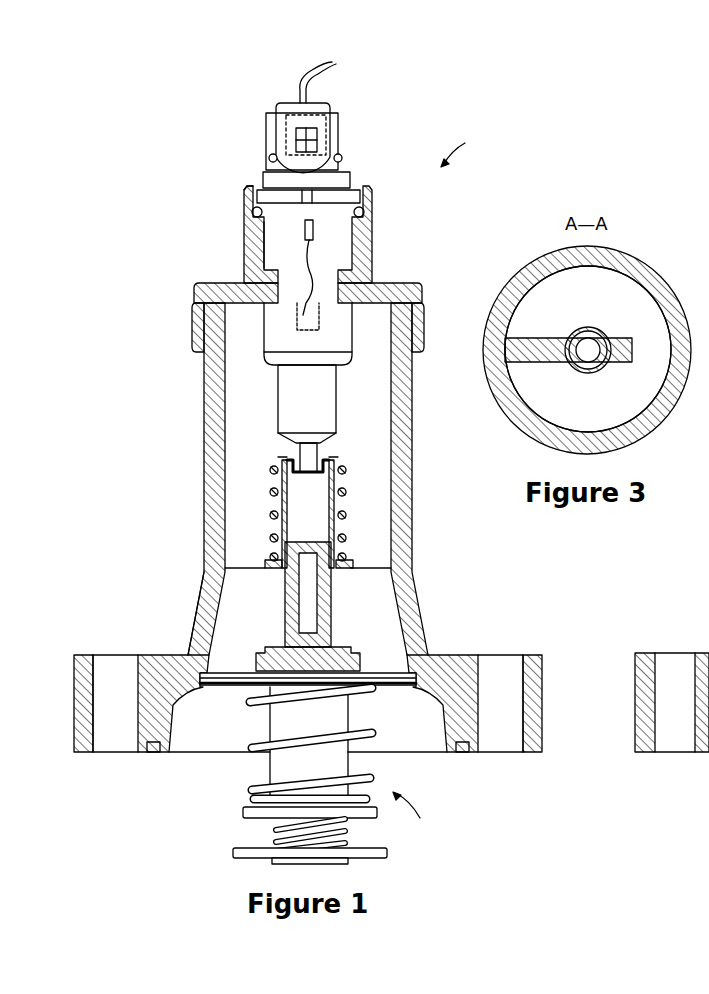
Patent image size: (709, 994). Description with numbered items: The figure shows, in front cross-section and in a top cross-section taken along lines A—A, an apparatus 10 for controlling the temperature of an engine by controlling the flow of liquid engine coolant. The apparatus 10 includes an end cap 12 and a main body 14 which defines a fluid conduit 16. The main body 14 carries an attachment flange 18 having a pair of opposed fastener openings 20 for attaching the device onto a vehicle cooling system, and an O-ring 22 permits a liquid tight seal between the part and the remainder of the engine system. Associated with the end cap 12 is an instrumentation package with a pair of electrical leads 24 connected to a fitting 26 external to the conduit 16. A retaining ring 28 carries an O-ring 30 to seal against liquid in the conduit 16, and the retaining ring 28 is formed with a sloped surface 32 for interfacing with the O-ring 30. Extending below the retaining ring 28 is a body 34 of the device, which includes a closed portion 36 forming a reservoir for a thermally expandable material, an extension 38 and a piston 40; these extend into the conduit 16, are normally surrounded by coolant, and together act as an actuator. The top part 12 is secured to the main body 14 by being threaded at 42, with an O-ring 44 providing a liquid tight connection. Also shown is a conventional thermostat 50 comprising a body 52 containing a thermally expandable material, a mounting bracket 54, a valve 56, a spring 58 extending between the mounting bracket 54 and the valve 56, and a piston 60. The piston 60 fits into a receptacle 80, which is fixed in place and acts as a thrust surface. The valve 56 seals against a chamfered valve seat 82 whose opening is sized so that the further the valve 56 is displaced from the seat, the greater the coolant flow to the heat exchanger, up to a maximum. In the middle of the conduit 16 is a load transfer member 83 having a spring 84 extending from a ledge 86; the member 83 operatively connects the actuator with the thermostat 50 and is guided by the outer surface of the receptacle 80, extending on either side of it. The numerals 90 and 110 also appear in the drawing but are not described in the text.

In FIG. 1, the apparatus for controlling a temperature of an engine 10 is at (463, 145).
In FIG. 1, the end cap 12 is at (373, 247).
In FIG. 1, the main body 14 is at (413, 430).
In FIG. 3, the main body 14 is at (634, 263).
In FIG. 1, the fluid conduit 16 is at (379, 413).
In FIG. 3, the fluid conduit 16 is at (569, 316).
In FIG. 1, the attachment flange 18 is at (157, 655).
In FIG. 1, the fastener openings 20 is at (105, 667).
In FIG. 1, the O-ring 22 is at (463, 754).
In FIG. 1, the electrical leads 24 is at (325, 88).
In FIG. 1, the fitting 26 is at (340, 135).
In FIG. 1, the retaining ring 28 is at (362, 197).
In FIG. 1, the O-ring 30 is at (243, 197).
In FIG. 1, the sloped surface 32 is at (253, 205).
In FIG. 1, the body 34 is at (264, 252).
In FIG. 1, the closed portion 36 is at (264, 350).
In FIG. 1, the extension 38 is at (278, 402).
In FIG. 1, the piston 40 is at (300, 455).
In FIG. 1, the threaded connection 42 is at (193, 330).
In FIG. 1, the O-ring 44 is at (198, 291).
In FIG. 1, the thermostat 50 is at (339, 828).
In FIG. 1, the body 52 is at (270, 772).
In FIG. 1, the mounting bracket 54 is at (243, 813).
In FIG. 1, the valve 56 is at (232, 673).
In FIG. 1, the spring 58 is at (250, 710).
In FIG. 1, the piston 60 is at (318, 612).
In FIG. 3, the piston 60 is at (595, 366).
In FIG. 1, the receptacle 80 is at (318, 541).
In FIG. 3, the receptacle 80 is at (606, 336).
In FIG. 1, the chamfered valve seat 82 is at (185, 655).
In FIG. 3, the chamfered valve seat 82 is at (573, 378).
In FIG. 1, the load transfer member 83 is at (348, 496).
In FIG. 1, the spring 84 is at (345, 468).
In FIG. 1, the ledge 86 is at (341, 566).
In FIG. 1, the mounting block 90 is at (672, 727).
In FIG. 1, the sensor element 110 is at (298, 320).